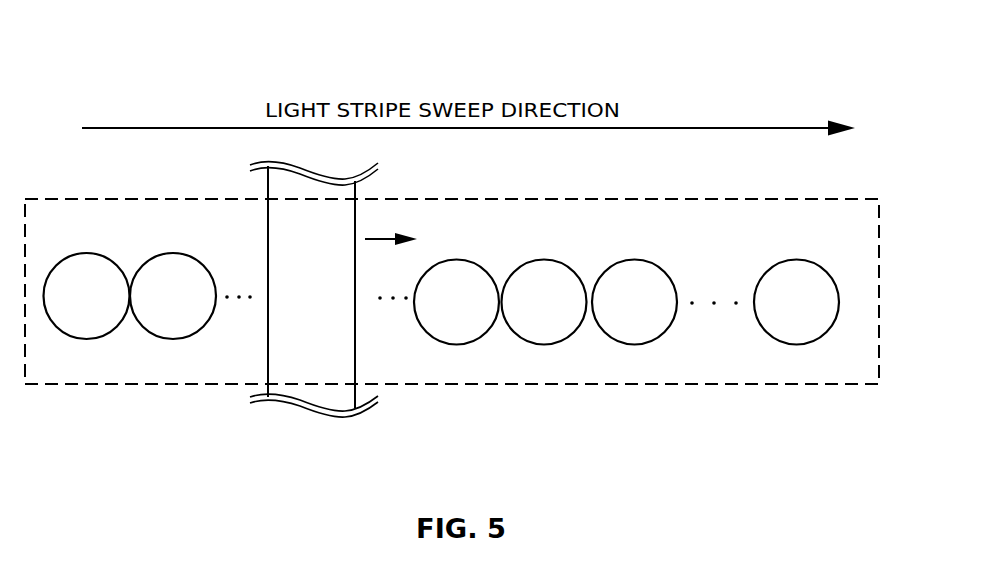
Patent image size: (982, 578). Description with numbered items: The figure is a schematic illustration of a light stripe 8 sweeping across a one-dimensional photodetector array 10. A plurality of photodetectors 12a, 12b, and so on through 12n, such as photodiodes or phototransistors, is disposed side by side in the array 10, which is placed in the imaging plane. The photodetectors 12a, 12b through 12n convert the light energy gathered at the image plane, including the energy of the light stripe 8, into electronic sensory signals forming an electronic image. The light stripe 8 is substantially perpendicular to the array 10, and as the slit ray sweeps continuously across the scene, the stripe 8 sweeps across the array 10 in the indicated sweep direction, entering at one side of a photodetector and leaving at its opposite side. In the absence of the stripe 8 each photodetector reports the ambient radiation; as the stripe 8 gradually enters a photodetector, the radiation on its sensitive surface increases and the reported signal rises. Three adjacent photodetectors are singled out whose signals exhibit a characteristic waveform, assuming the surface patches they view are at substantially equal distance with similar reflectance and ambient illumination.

The light stripe 8 is at (357, 330).
The 1D photodetector array 10 is at (637, 385).
The photodetector 12a is at (77, 253).
The photodetector 12b is at (163, 253).
The photodetector 12n is at (815, 262).